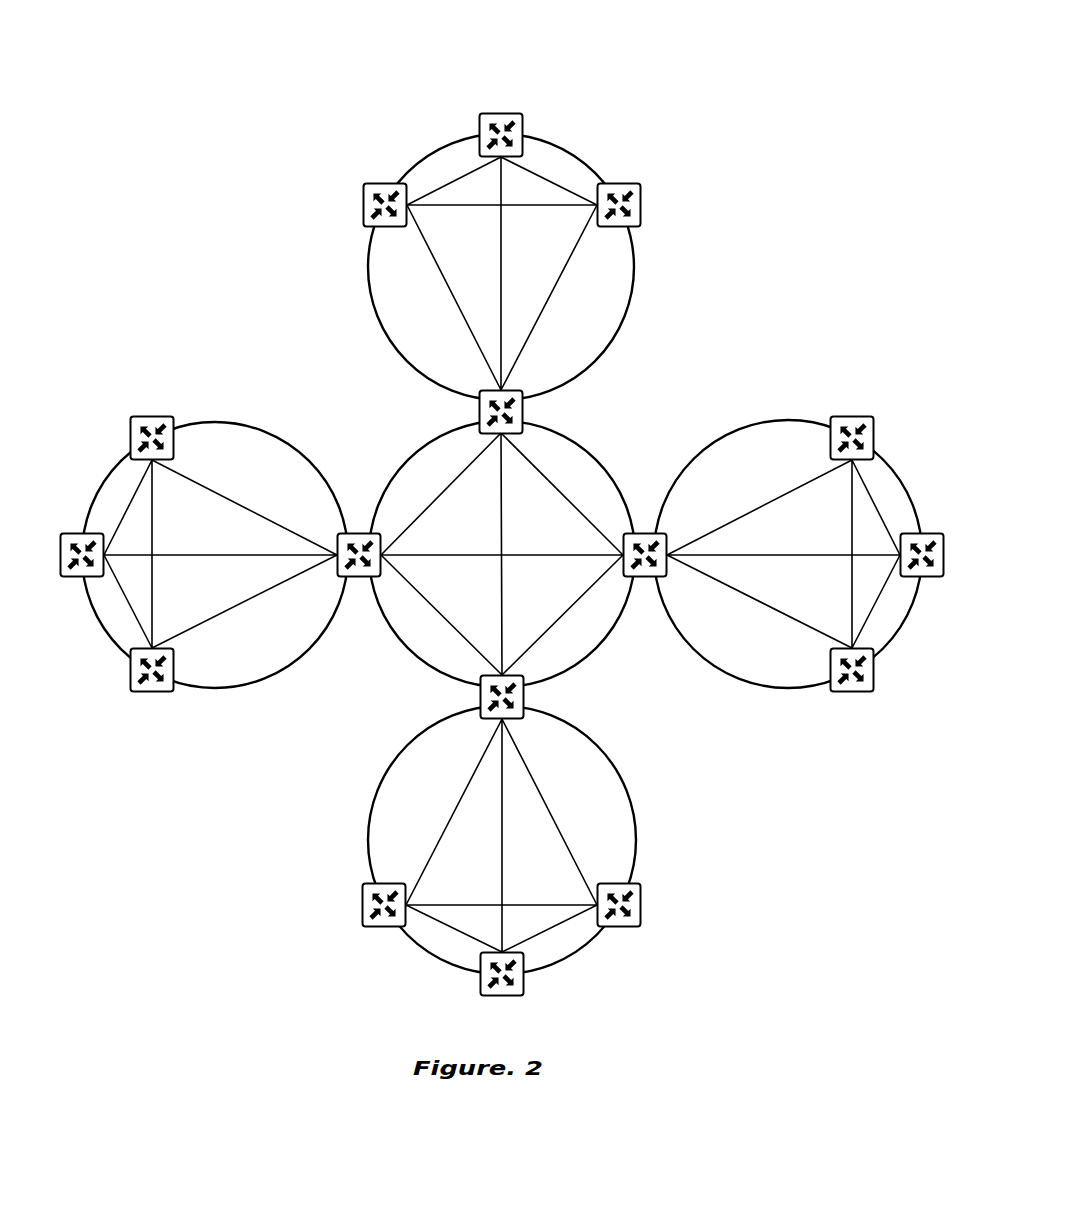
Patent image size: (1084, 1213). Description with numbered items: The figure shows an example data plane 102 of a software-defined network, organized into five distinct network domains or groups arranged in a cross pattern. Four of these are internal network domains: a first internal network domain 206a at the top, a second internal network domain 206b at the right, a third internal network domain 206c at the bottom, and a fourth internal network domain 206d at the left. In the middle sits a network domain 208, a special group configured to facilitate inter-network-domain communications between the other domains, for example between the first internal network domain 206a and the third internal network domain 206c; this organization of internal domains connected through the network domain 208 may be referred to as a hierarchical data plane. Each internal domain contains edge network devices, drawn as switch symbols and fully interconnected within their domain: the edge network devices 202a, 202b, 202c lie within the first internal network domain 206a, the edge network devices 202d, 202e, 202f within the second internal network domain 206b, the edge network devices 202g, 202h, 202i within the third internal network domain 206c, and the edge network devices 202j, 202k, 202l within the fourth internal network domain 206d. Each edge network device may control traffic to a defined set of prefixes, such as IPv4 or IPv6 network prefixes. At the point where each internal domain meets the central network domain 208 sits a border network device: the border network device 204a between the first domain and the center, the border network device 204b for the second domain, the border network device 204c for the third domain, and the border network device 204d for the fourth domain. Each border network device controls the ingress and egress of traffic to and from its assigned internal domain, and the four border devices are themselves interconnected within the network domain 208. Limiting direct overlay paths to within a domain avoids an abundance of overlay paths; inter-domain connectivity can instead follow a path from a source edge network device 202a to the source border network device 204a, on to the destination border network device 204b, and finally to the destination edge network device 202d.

The data plane 102 is at (845, 70).
The edge network device 202a is at (363, 193).
The edge network device 202b is at (523, 130).
The edge network device 202c is at (642, 193).
The edge network device 202d is at (873, 423).
The edge network device 202e is at (933, 533).
The edge network device 202f is at (873, 687).
The edge network device 202g is at (642, 918).
The edge network device 202h is at (523, 985).
The edge network device 202i is at (362, 918).
The edge network device 202j is at (130, 687).
The edge network device 202k is at (72, 533).
The edge network device 202l is at (130, 423).
The border network device 204a is at (523, 420).
The border network device 204b is at (641, 533).
The border network device 204c is at (523, 705).
The border network device 204d is at (356, 533).
The first internal network domain 206a is at (633, 312).
The second internal network domain 206b is at (743, 422).
The third internal network domain 206c is at (633, 798).
The fourth internal network domain 206d is at (258, 423).
The network domain 208 is at (398, 652).